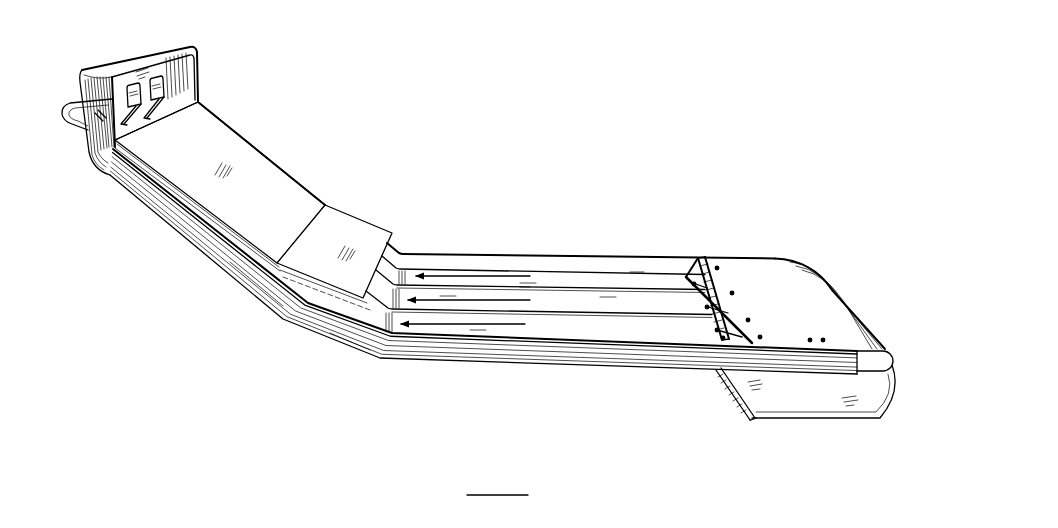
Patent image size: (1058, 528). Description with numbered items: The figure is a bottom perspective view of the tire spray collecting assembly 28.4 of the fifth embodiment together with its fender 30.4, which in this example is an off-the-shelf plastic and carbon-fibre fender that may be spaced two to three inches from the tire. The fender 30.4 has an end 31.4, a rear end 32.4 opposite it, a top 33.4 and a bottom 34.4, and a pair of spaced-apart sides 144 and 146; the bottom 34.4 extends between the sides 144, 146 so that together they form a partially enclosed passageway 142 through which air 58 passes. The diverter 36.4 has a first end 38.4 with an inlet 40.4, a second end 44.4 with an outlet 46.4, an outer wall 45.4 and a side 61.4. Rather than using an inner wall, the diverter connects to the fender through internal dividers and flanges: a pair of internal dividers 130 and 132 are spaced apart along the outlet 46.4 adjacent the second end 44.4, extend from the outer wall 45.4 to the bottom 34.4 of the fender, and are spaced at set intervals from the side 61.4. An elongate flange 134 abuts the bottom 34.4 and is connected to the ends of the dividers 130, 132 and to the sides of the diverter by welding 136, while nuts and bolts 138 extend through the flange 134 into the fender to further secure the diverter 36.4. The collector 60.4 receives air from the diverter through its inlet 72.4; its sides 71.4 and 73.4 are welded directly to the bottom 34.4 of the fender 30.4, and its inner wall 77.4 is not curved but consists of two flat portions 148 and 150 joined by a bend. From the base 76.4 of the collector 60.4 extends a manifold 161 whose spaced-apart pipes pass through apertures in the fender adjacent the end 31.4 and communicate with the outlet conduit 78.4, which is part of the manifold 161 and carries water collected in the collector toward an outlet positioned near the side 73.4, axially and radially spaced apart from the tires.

The tire spray collecting assembly 28.4 is at (725, 158).
The fender 30.4 is at (423, 369).
The fender end 31.4 is at (163, 46).
The rear end 32.4 is at (889, 362).
The top 33.4 is at (497, 368).
The bottom 34.4 is at (587, 311).
The diverter 36.4 is at (869, 304).
The first end 38.4 is at (747, 426).
The inlet 40.4 is at (722, 397).
The second end 44.4 is at (688, 249).
The outer wall 45.4 is at (801, 296).
The outlet 46.4 is at (668, 284).
The air 58 is at (512, 279).
The collector 60.4 is at (278, 161).
The side 61.4 is at (878, 396).
The side 71.4 is at (326, 205).
The inlet 72.4 is at (398, 272).
The side 73.4 is at (325, 296).
The base 76.4 is at (193, 99).
The inner wall 77.4 is at (277, 212).
The outlet conduit 78.4 is at (85, 134).
The internal divider 130 is at (708, 262).
The internal divider 132 is at (741, 316).
The elongate flange 134 is at (714, 331).
The welding 136 is at (703, 311).
The nuts and bolts 138 is at (738, 342).
The partially enclosed passageway 142 is at (557, 262).
The side 144 is at (408, 347).
The side 146 is at (489, 254).
The flat portion 148 is at (344, 232).
The flat portion 150 is at (208, 142).
The manifold 161 is at (55, 103).